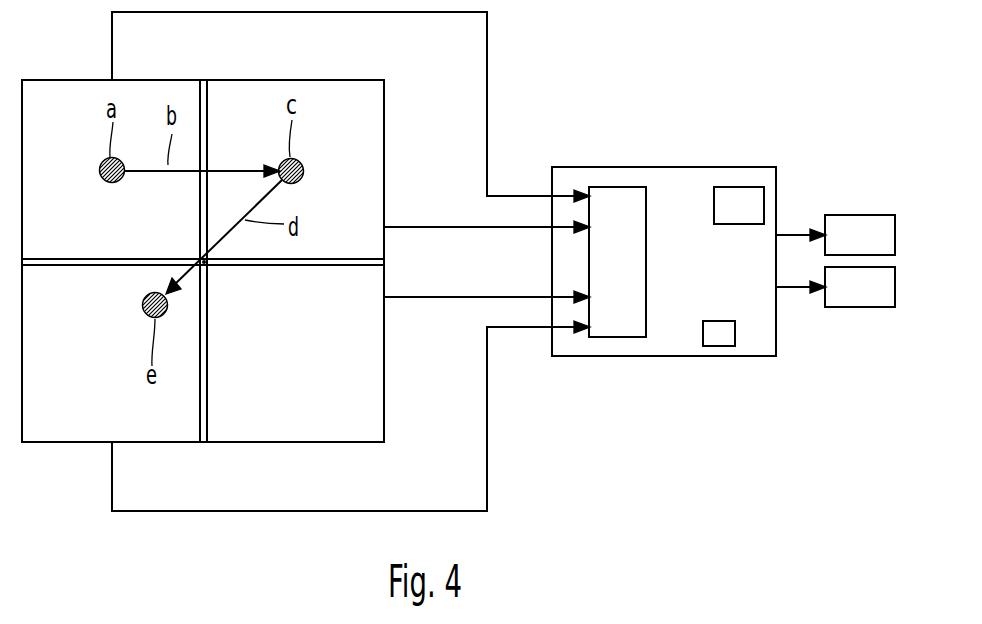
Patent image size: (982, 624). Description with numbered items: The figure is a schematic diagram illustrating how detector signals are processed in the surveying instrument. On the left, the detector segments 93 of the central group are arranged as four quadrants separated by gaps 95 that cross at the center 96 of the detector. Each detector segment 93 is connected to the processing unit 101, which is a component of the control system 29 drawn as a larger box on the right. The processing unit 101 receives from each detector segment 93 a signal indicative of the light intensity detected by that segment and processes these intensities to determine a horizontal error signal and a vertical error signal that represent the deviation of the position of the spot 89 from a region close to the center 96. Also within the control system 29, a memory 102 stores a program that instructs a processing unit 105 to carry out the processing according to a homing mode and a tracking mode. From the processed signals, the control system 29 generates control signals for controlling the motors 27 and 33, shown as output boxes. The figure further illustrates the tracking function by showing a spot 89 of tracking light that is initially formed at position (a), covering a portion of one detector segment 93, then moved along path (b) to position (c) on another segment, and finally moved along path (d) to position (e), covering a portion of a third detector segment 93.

The motor 27 is at (870, 250).
The control system 29 is at (667, 166).
The motor 33 is at (870, 302).
The spot of tracking light 89 is at (99, 168).
The detector segments 93 is at (66, 232).
The separating gaps between sensor fields 95 is at (205, 99).
The center of the detector 96 is at (207, 267).
The processing unit 101 is at (646, 262).
The memory 102 is at (722, 186).
The processing unit 105 is at (718, 347).